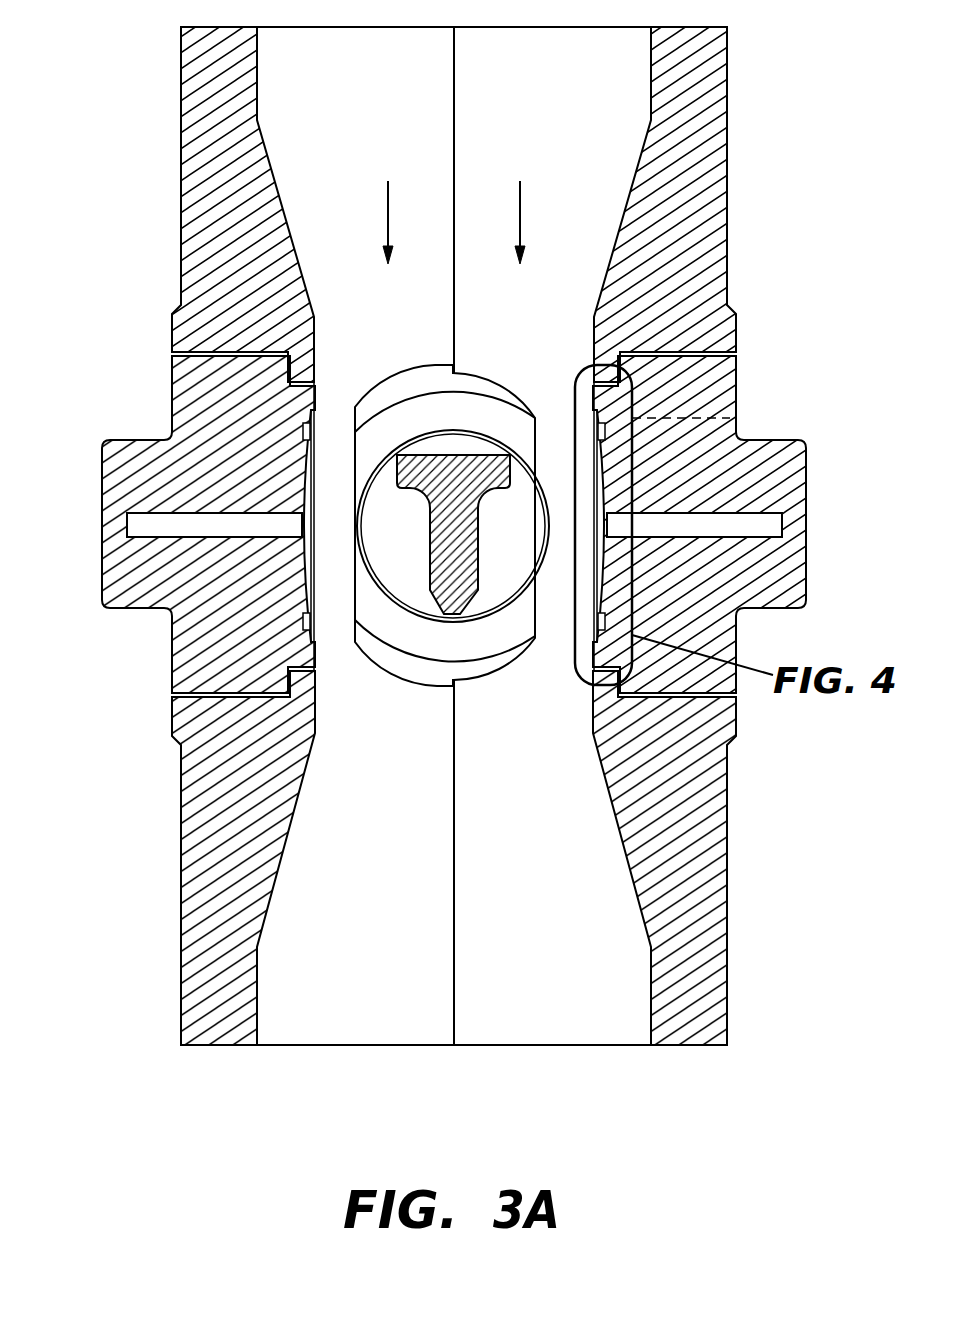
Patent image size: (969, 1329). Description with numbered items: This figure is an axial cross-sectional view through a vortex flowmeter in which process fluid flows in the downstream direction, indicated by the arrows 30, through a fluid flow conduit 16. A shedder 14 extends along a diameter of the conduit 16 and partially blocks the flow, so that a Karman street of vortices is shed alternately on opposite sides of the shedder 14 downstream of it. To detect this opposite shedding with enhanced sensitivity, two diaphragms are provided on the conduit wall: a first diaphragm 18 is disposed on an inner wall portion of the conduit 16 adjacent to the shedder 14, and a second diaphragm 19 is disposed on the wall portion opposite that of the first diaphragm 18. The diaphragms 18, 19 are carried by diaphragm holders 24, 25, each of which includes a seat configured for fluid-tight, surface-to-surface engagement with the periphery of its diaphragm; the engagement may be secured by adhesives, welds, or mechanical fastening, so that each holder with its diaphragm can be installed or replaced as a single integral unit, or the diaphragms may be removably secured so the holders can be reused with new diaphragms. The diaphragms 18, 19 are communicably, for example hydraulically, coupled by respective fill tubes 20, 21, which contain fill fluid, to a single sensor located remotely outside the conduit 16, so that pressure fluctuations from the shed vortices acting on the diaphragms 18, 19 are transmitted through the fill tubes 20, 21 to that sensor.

The shedder 14 is at (433, 562).
The fluid flow conduit 16 is at (188, 52).
The diaphragm 18 is at (303, 505).
The diaphragm 19 is at (605, 505).
The fill tube 20 is at (133, 526).
The fill tube 21 is at (777, 525).
The diaphragm holder 24 is at (130, 447).
The diaphragm holder 25 is at (778, 447).
The arrows 30 is at (388, 208).